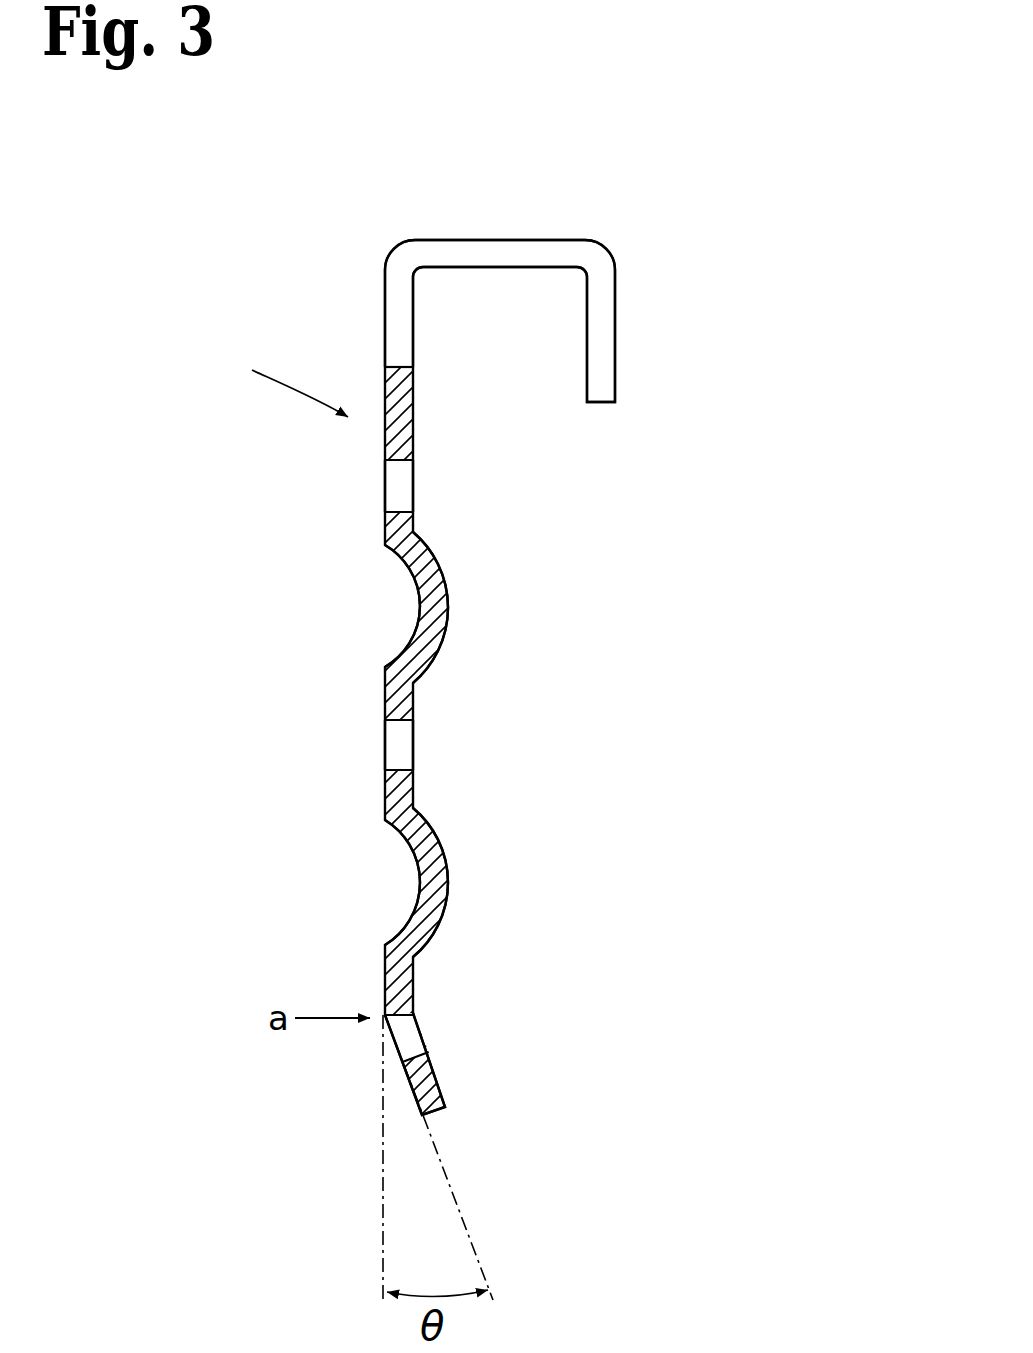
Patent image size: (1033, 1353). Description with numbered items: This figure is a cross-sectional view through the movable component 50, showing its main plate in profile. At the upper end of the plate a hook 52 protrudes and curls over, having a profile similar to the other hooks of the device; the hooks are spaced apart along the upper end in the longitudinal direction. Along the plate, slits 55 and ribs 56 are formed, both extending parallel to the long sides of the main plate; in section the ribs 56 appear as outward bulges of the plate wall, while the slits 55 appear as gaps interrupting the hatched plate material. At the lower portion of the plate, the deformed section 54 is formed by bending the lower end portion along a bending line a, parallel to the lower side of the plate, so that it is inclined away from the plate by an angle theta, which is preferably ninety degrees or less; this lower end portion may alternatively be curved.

The movable component 50 is at (752, 343).
The hook 52 is at (512, 240).
The deformed section 54 is at (440, 1076).
The slit 55 is at (395, 493).
The rib 56 is at (447, 592).